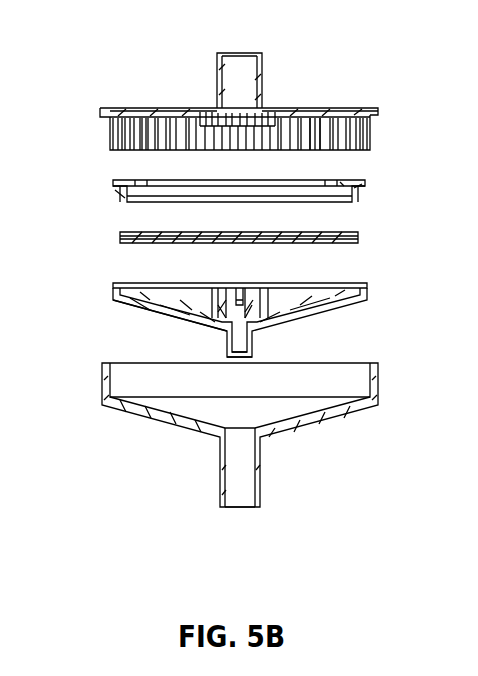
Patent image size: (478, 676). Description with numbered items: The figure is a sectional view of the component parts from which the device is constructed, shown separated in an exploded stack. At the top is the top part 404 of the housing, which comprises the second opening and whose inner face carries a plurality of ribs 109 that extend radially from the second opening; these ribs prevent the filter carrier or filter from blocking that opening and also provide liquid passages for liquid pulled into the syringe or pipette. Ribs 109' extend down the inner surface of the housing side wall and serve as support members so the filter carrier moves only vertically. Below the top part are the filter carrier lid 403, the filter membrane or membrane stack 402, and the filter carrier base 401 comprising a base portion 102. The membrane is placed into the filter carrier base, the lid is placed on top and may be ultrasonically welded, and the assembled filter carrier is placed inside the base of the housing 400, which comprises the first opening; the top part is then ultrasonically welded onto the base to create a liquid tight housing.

The top part of the housing 404 is at (334, 78).
The ribs 109 is at (145, 89).
The ribs 109' is at (372, 151).
The filter carrier lid 403 is at (366, 192).
The filter membrane or membrane stack 402 is at (358, 238).
The filter carrier base 401 is at (350, 300).
The base portion 102 is at (142, 308).
The base of the housing 400 is at (316, 420).